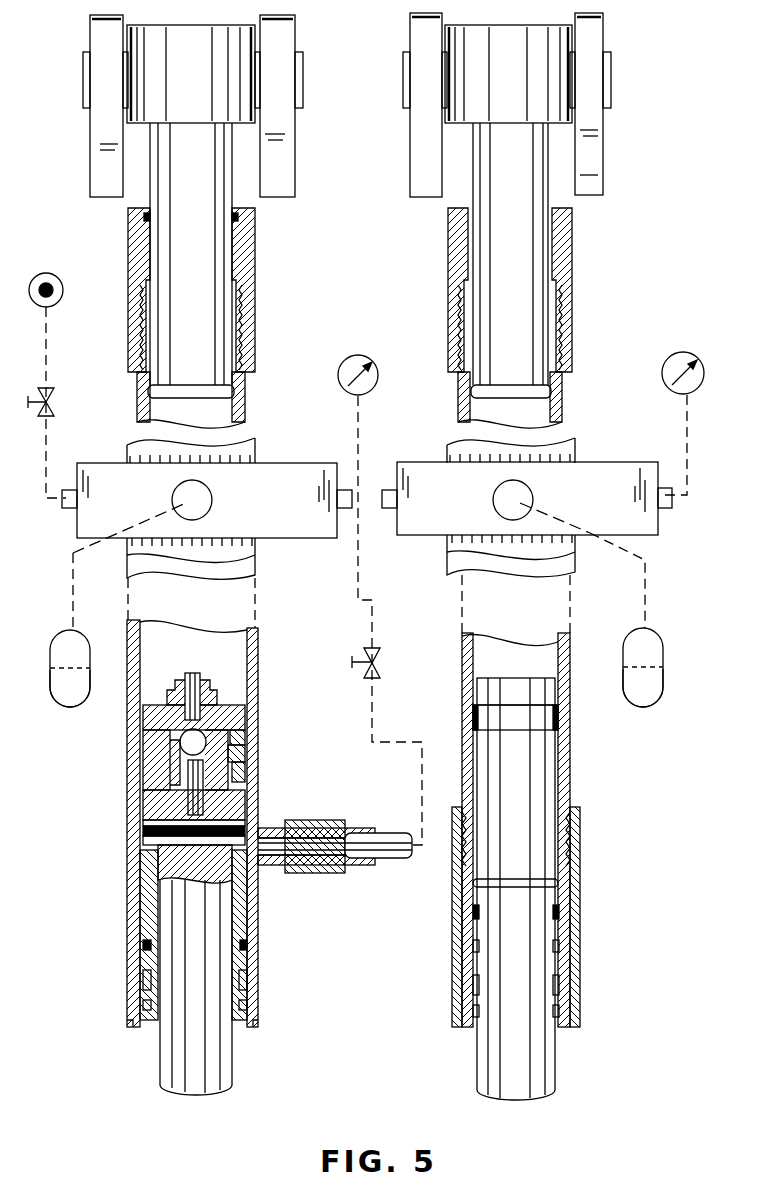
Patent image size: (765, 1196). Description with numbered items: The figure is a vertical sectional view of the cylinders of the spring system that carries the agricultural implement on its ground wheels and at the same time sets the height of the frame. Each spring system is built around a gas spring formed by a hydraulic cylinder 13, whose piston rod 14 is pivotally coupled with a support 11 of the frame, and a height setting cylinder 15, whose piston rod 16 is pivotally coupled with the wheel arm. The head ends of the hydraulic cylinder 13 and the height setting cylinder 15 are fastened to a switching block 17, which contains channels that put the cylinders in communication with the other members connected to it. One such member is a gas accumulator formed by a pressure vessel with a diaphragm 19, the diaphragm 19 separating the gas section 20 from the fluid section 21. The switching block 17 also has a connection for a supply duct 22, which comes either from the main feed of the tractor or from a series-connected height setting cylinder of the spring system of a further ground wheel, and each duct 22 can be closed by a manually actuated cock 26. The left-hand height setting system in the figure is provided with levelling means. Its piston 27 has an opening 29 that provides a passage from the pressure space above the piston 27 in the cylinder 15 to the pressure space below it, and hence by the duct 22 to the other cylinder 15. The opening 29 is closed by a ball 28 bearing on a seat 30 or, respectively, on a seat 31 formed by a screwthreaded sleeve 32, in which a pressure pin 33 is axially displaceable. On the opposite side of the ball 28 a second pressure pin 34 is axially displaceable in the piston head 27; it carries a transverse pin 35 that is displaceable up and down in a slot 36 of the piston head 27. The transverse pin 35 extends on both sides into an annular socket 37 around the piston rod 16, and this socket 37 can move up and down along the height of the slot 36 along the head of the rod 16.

The support 11 is at (105, 133).
The hydraulic cylinder 13 is at (255, 327).
The piston rod 14 is at (488, 170).
The height setting cylinder 15 is at (258, 992).
The piston rod 16 is at (215, 1085).
The switching block 17 is at (283, 535).
The diaphragm 19 is at (72, 670).
The gas section 20 is at (70, 706).
The fluid section 21 is at (62, 645).
The supply duct 22 is at (46, 322).
The manually actuated cock 26 is at (50, 410).
The piston 27 is at (165, 748).
The ball 28 is at (235, 740).
The opening 29 is at (235, 755).
The seat 30 is at (240, 776).
The seat 31 is at (235, 716).
The screwthreaded sleeve 32 is at (217, 690).
The pressure pin 33 is at (195, 676).
The second pressure pin 34 is at (235, 812).
The transverse pin 35 is at (150, 830).
The slot 36 is at (150, 845).
The annular socket 37 is at (150, 870).